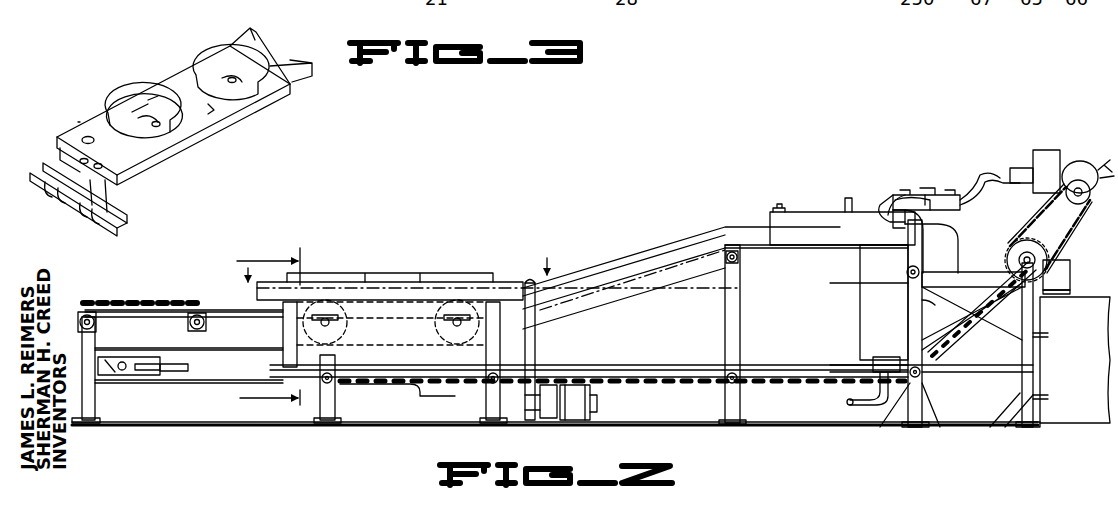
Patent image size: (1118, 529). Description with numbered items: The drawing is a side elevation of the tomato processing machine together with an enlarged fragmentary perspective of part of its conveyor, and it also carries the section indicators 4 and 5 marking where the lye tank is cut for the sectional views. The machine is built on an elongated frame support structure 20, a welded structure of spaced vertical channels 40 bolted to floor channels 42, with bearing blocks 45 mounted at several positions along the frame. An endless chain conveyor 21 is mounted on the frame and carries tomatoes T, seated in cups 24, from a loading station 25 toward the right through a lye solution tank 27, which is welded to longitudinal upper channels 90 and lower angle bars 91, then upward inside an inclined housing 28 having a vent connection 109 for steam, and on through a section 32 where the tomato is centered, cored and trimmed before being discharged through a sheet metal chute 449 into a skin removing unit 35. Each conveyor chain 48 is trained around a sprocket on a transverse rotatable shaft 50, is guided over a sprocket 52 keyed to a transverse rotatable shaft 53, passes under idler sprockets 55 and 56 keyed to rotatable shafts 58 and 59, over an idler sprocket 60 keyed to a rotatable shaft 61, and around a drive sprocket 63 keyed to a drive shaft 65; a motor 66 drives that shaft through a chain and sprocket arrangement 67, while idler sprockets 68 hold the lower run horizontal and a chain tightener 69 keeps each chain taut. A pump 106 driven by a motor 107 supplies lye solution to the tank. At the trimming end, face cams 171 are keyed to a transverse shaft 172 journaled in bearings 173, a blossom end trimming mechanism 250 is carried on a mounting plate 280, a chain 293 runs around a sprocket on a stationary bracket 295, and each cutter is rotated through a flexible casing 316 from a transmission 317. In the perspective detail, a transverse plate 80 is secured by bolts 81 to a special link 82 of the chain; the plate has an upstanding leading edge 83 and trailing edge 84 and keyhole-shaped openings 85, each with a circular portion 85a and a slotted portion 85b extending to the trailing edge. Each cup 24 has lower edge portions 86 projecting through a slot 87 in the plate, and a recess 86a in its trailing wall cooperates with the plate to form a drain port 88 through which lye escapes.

In FIG. 2, the frame support structure 20 is at (270, 430).
In FIG. 3, the endless chain conveyor 21 is at (135, 211).
In FIG. 2, the endless chain conveyor 21 is at (228, 378).
In FIG. 2, the cups 24 is at (388, 388).
In FIG. 2, the loading station 25 is at (62, 305).
In FIG. 2, the lye solution tank 27 is at (398, 338).
In FIG. 2, the inclined housing 28 is at (575, 262).
In FIG. 2, the section 32 is at (805, 212).
In FIG. 2, the skin removing unit 35 is at (1075, 292).
In FIG. 2, the vertical channels 40 is at (95, 403).
In FIG. 2, the floor channels 42 is at (100, 430).
In FIG. 2, the bearing blocks 45 is at (95, 326).
In FIG. 3, the endless chain 48 is at (130, 222).
In FIG. 2, the endless chain 48 is at (215, 375).
In FIG. 2, the transverse rotatable shaft 50 is at (92, 325).
In FIG. 2, the sprocket 52 is at (197, 330).
In FIG. 2, the transverse rotatable shaft 53 is at (200, 312).
In FIG. 2, the idler sprocket 55 is at (315, 300).
In FIG. 2, the idler sprocket 56 is at (440, 310).
In FIG. 2, the rotatable shaft 58 is at (328, 326).
In FIG. 2, the rotatable shaft 59 is at (453, 326).
In FIG. 2, the idler sprocket 60 is at (728, 262).
In FIG. 2, the rotatable shaft 61 is at (740, 258).
In FIG. 2, the drive sprocket 63 is at (1048, 295).
In FIG. 2, the drive shaft 65 is at (1022, 250).
In FIG. 2, the motor 66 is at (1080, 175).
In FIG. 2, the chain and sprocket arrangement 67 is at (1035, 215).
In FIG. 2, the idler sprockets 68 is at (322, 388).
In FIG. 2, the chain tightener 69 is at (142, 378).
In FIG. 3, the plate 80 is at (78, 122).
In FIG. 2, the plate 80 is at (356, 386).
In FIG. 3, the bolts 81 is at (100, 164).
In FIG. 3, the special link 82 is at (82, 180).
In FIG. 3, the leading edge 83 is at (165, 152).
In FIG. 3, the trailing edge 84 is at (225, 44).
In FIG. 3, the keyhole-shaped openings 85 is at (168, 132).
In FIG. 3, the circular portion 85a is at (158, 125).
In FIG. 3, the slotted portion 85b is at (207, 78).
In FIG. 3, the lower edge portions 86 is at (215, 108).
In FIG. 3, the recess 86a is at (150, 100).
In FIG. 3, the slot 87 is at (262, 76).
In FIG. 3, the drain port 88 is at (140, 108).
In FIG. 2, the longitudinal upper channels 90 is at (378, 310).
In FIG. 2, the lower angle bars 91 is at (368, 366).
In FIG. 2, the pump 106 is at (545, 428).
In FIG. 2, the motor 107 is at (590, 415).
In FIG. 2, the vent connection 109 is at (870, 200).
In FIG. 2, the face cam 171 is at (925, 300).
In FIG. 2, the transverse shaft 172 is at (910, 283).
In FIG. 2, the bearings 173 is at (908, 265).
In FIG. 2, the blossom end trimming mechanism 250 is at (945, 185).
In FIG. 2, the mounting plate 280 is at (958, 235).
In FIG. 2, the chain 293 is at (905, 222).
In FIG. 2, the stationary bracket 295 is at (903, 212).
In FIG. 2, the flexible casing 316 is at (990, 172).
In FIG. 2, the transmission 317 is at (1042, 155).
In FIG. 2, the sheet metal chute 449 is at (1068, 275).
In FIG. 2, the tomatoes T is at (150, 295).
In FIG. 2, the section line 4 is at (389, 270).
In FIG. 2, the section line 5 is at (268, 331).